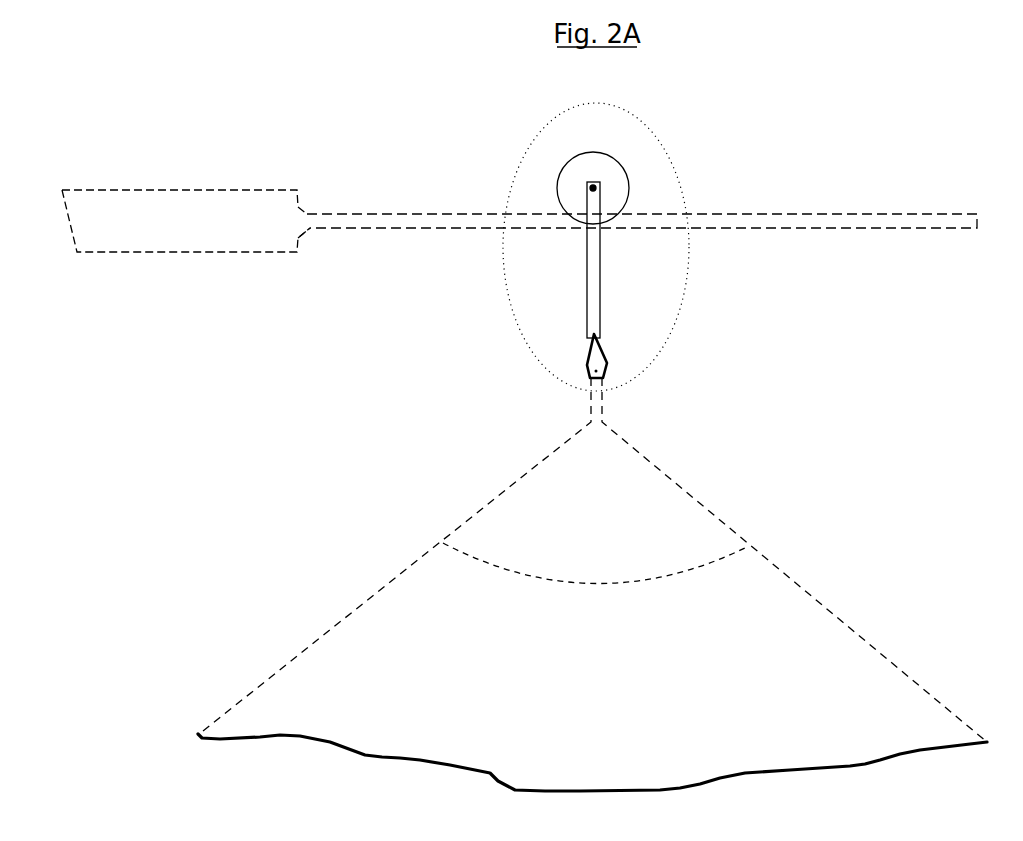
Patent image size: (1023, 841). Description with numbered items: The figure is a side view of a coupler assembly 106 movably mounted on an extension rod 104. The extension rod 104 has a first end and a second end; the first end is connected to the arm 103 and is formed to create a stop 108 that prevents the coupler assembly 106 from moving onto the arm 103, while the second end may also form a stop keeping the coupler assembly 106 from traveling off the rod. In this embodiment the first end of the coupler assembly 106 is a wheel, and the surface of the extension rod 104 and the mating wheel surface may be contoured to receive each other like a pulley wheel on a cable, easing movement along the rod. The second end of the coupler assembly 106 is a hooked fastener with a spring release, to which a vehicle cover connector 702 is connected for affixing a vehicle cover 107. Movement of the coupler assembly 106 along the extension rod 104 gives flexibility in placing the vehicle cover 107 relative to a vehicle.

The arm 103 is at (186, 178).
The stop 108 is at (334, 184).
The extension rod 104 is at (642, 176).
The coupler assembly 106 is at (619, 225).
The vehicle cover connector 702 is at (645, 388).
The vehicle cover 107 is at (592, 560).